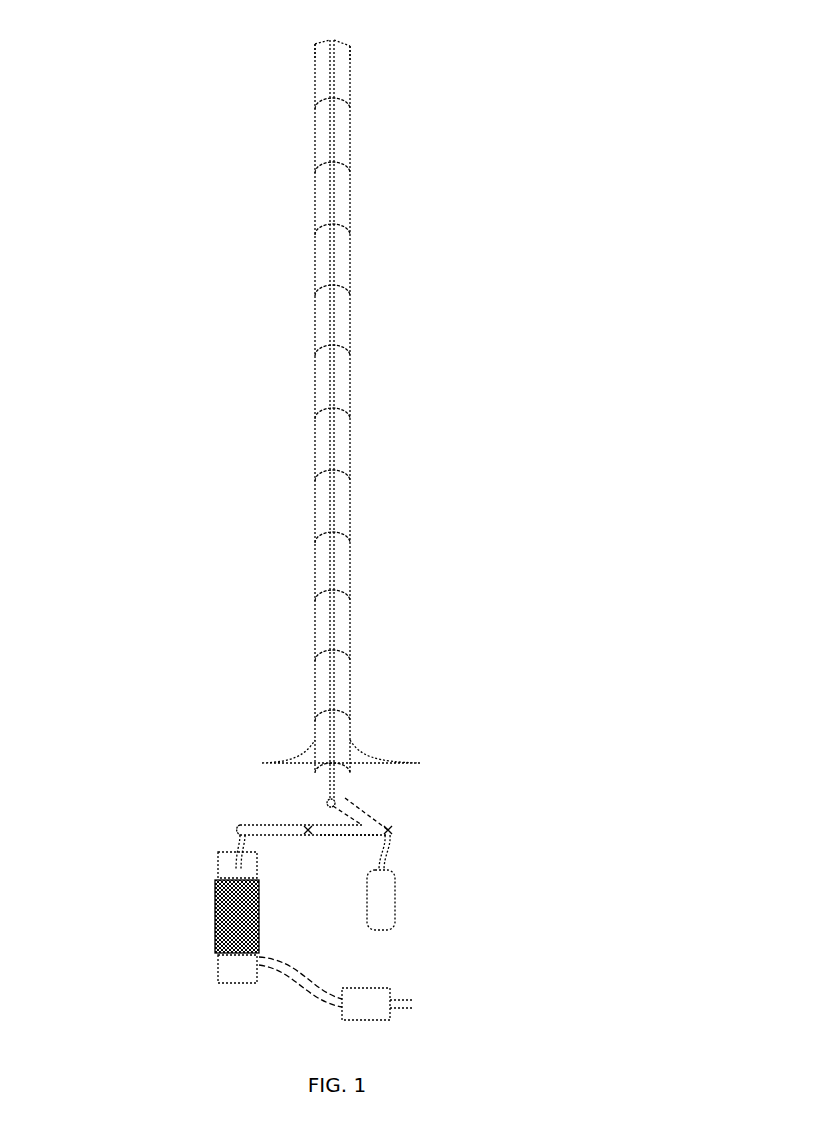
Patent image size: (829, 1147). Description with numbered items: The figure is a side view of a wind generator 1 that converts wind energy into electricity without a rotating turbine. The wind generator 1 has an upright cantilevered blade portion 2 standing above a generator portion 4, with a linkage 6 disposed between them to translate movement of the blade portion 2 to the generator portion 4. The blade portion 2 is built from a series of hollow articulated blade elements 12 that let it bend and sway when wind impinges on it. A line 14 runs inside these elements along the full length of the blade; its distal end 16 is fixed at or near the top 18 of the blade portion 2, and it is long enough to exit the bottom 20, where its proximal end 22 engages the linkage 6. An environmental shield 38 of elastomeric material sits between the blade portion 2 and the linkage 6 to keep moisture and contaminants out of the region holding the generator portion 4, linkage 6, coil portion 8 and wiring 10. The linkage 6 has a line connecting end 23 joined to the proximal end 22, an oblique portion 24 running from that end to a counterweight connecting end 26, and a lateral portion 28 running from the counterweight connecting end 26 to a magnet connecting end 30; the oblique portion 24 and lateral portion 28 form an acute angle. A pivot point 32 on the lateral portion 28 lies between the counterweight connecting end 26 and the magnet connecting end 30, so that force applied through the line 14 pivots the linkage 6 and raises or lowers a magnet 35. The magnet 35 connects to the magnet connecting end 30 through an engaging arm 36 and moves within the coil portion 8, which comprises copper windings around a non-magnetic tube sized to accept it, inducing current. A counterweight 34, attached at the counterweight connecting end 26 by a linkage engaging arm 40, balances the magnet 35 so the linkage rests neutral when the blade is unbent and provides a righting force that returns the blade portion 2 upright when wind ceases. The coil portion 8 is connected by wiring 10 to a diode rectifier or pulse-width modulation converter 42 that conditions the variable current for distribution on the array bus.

The wind generator 1 is at (103, 459).
The blade portion 2 is at (361, 404).
The generator portion 4 is at (106, 905).
The linkage 6 is at (271, 822).
The coil portion 8 is at (213, 918).
The wiring 10 is at (300, 1011).
The articulated blade elements 12 is at (353, 258).
The line 14 is at (341, 86).
The distal end 16 is at (326, 46).
The top 18 is at (339, 36).
The bottom 20 is at (354, 771).
The proximal end 22 is at (326, 797).
The line connecting end 23 is at (341, 801).
The oblique portion 24 is at (379, 813).
The counterweight connecting end 26 is at (397, 831).
The lateral portion 28 is at (342, 839).
The magnet connecting end 30 is at (238, 823).
The pivot point 32 is at (307, 839).
The counterweight 34 is at (398, 899).
The magnet 35 is at (216, 866).
The engaging arm 36 is at (232, 838).
The environmental shield 38 is at (367, 750).
The linkage engaging arm 40 is at (387, 859).
The diode rectifier or pulse-width modulation converter 42 is at (395, 986).